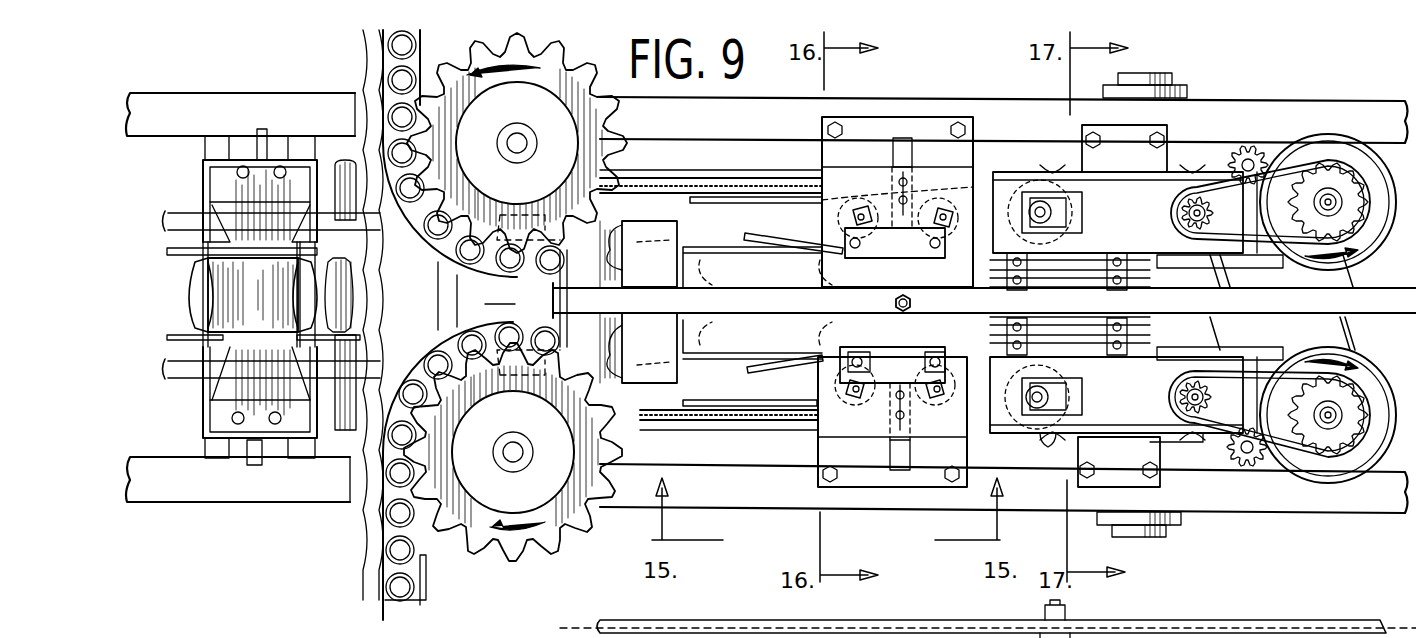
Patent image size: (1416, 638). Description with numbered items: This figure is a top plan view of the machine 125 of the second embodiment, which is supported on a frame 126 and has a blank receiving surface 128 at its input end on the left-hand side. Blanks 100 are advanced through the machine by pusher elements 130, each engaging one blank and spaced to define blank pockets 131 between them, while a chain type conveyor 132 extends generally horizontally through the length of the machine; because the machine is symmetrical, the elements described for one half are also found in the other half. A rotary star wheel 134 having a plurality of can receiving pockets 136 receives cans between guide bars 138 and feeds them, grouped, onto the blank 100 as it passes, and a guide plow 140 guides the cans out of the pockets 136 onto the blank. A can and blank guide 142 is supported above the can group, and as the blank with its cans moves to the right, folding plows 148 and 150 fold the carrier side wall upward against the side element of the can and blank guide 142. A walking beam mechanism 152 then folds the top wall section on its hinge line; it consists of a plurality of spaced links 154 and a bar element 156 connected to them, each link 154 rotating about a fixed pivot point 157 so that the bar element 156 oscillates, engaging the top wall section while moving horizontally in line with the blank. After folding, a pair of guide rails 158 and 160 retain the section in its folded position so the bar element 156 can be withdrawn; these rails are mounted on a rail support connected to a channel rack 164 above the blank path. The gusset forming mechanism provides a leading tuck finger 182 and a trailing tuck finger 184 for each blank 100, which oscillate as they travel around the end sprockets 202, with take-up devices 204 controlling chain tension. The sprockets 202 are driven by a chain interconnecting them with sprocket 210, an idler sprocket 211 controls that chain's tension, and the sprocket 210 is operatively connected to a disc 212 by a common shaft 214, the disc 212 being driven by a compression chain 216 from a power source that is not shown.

The blank 100 is at (345, 183).
The machine 125 is at (1355, 528).
The frame 126 is at (180, 100).
The blank receiving surface 128 is at (205, 200).
The pusher elements 130 is at (320, 300).
The blank pockets 131 is at (502, 293).
The chain type conveyor 132 is at (725, 180).
The rotary star wheel 134 is at (560, 158).
The can receiving pockets 136 is at (620, 122).
The guide bars 138 is at (455, 605).
The guide plow 140 is at (498, 378).
The can and blank guide 142 is at (638, 302).
The folding plow 148 is at (740, 203).
The folding plow 150 is at (760, 235).
The walking beam mechanism 152 is at (820, 380).
The links 154 is at (855, 392).
The bar element 156 is at (875, 360).
The fixed pivot point 157 is at (857, 395).
The guide rail 158 is at (1135, 283).
The guide rail 160 is at (1148, 262).
The channel rack 164 is at (1368, 300).
The leading tuck finger 182 is at (1038, 445).
The trailing tuck finger 184 is at (1058, 445).
The end sprockets 202 is at (1200, 405).
The take-up devices 204 is at (1083, 203).
The sprocket 210 is at (1345, 402).
The idler sprocket 211 is at (1250, 468).
The disc 212 is at (1262, 345).
The common shaft 214 is at (1340, 425).
The compression chain 216 is at (1372, 490).